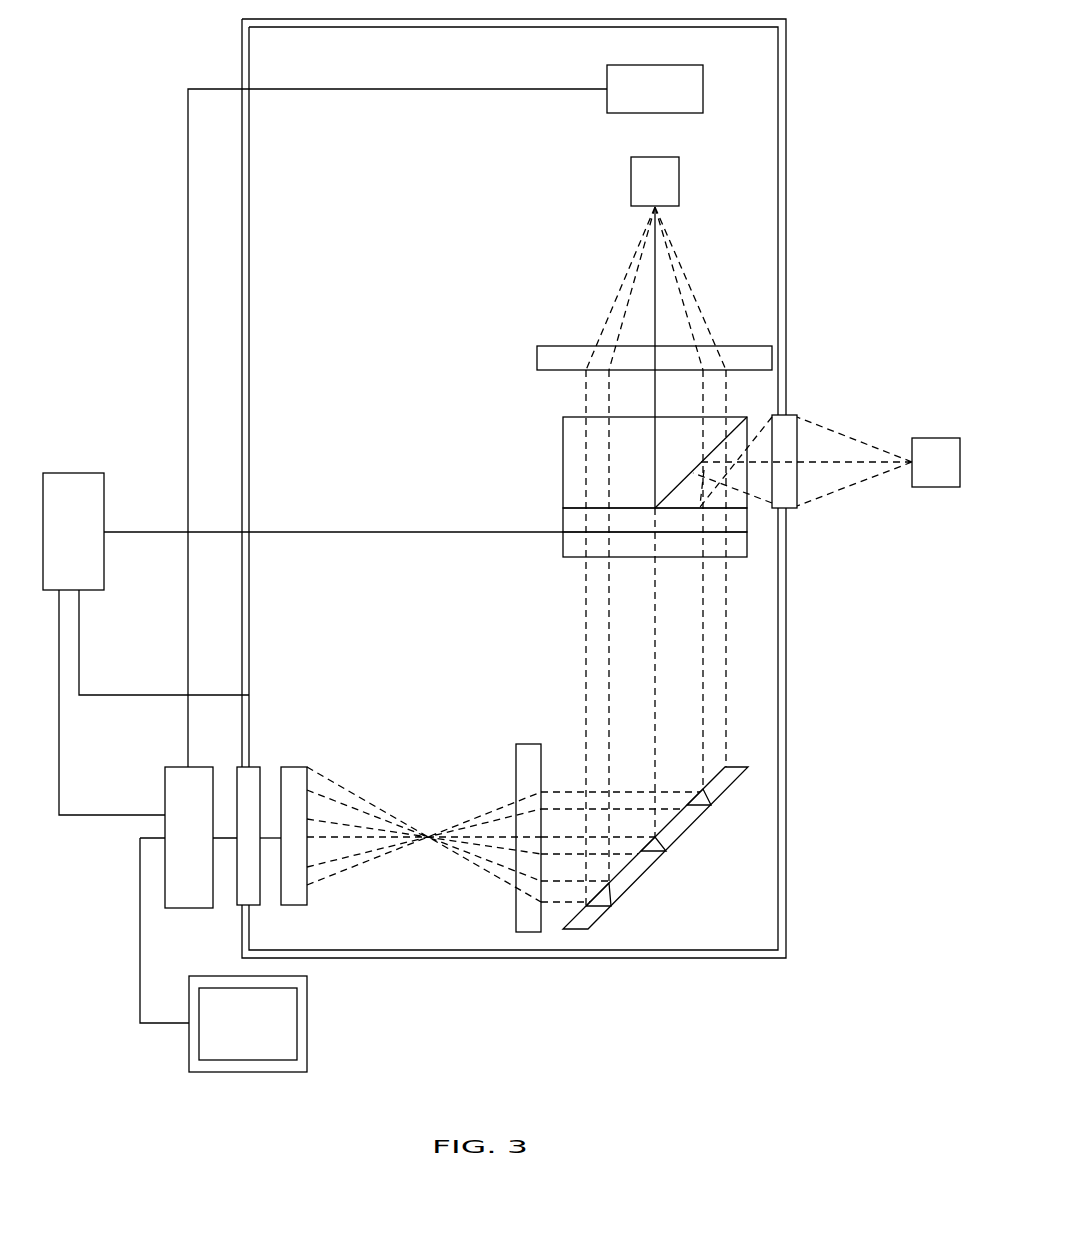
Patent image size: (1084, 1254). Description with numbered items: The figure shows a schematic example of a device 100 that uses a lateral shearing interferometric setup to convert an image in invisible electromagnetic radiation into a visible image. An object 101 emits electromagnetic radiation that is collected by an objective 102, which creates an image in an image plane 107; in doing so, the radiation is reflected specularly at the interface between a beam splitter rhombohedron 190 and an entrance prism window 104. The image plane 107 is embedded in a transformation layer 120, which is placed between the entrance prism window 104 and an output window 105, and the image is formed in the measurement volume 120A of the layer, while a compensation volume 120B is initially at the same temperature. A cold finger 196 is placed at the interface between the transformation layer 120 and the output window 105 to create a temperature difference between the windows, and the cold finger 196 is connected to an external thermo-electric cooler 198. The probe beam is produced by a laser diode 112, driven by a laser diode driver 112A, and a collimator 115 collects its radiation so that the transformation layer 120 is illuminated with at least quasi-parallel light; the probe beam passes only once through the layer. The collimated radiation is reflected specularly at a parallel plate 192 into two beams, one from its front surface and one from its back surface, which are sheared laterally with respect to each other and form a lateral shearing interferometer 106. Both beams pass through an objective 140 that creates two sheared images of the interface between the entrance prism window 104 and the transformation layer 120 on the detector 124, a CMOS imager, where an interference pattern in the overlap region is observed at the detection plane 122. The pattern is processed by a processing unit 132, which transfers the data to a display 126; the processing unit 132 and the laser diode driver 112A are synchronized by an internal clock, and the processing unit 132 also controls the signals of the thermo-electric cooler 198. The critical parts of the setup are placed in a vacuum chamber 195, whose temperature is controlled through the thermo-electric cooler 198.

The device 100 is at (858, 131).
The object 101 is at (941, 463).
The objective 102 is at (783, 443).
The entrance prism window 104 is at (739, 447).
The output window 105 is at (576, 545).
The lateral shearing interferometer 106 is at (357, 290).
The image plane 107 is at (736, 517).
The laser diode 112 is at (663, 183).
The laser diode driver 112A is at (688, 95).
The collimator 115 is at (566, 361).
The transformation layer 120 is at (576, 521).
The measurement volume 120A is at (676, 517).
The compensation volume 120B is at (621, 517).
The detection plane 122 is at (293, 890).
The detector 124 is at (250, 779).
The display 126 is at (281, 1027).
The processing unit 132 is at (177, 792).
The objective 140 is at (545, 737).
The beam splitter rhombohedron 190 is at (573, 434).
The parallel plate 192 is at (713, 790).
The vacuum chamber 195 is at (779, 778).
The cold finger 196 is at (600, 540).
The thermo-electric cooler 198 is at (80, 498).